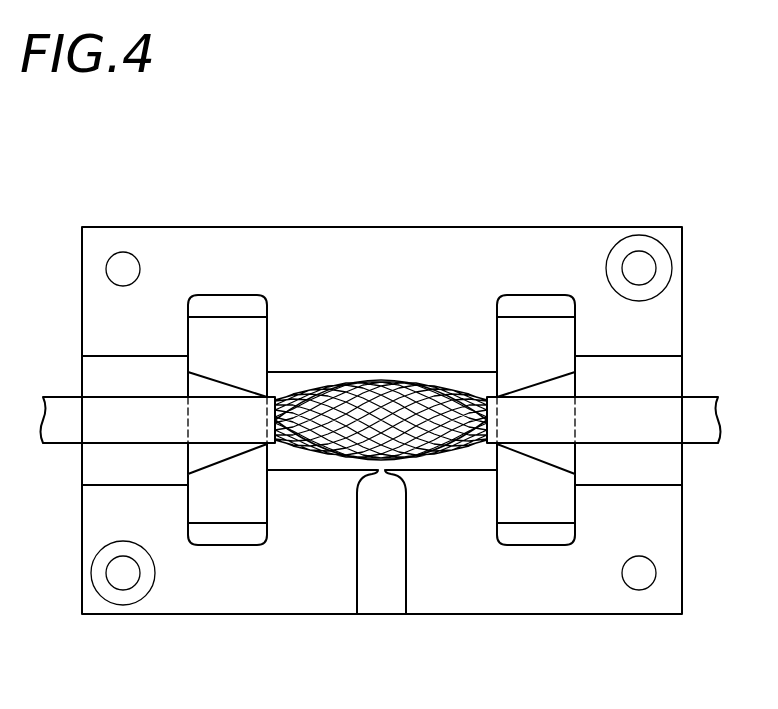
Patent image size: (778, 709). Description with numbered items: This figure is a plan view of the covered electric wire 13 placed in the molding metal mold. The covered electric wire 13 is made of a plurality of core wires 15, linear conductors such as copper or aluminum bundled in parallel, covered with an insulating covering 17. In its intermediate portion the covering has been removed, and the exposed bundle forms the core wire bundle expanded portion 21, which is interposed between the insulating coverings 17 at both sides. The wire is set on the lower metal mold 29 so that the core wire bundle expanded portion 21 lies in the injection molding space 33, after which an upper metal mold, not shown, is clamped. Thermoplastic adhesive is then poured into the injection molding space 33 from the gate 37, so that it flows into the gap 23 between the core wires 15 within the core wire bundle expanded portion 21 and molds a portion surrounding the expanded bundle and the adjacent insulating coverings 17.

The covered electric wire 13 is at (390, 424).
The core wire 15 is at (431, 385).
The insulating covering 17 is at (104, 431).
The core wire bundle expanded portion 21 is at (351, 368).
The gap 23 is at (377, 427).
The lower metal mold 29 is at (606, 219).
The injection molding space 33 is at (312, 375).
The gate 37 is at (382, 467).